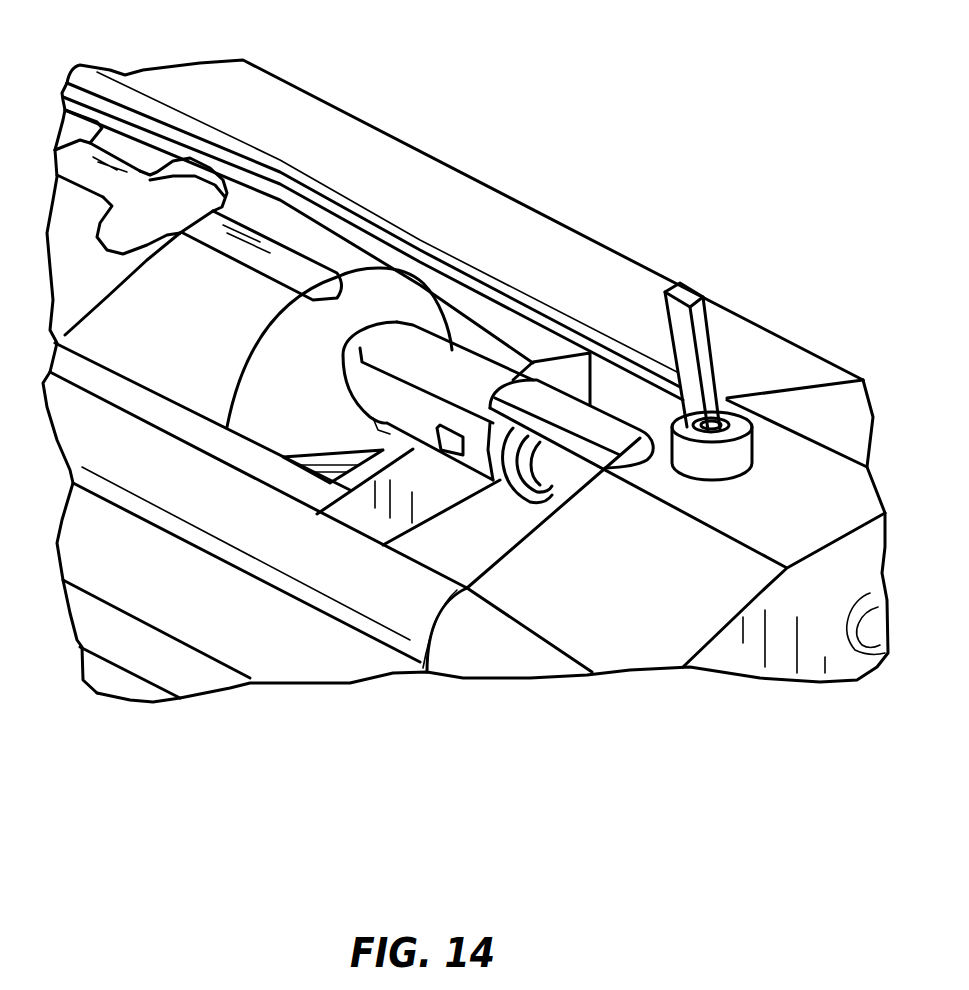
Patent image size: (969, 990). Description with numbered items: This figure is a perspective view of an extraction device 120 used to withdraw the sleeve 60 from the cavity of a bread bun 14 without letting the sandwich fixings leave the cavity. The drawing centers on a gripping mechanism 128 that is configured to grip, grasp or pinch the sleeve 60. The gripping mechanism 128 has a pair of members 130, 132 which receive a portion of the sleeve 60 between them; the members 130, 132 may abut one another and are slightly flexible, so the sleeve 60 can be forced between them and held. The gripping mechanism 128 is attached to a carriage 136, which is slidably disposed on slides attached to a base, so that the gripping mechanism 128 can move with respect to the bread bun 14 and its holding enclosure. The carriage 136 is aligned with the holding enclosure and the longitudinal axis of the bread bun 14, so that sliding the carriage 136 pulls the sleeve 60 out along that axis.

The bread bun 14 is at (265, 255).
The sleeve 60 is at (462, 373).
The extraction device 120 is at (627, 243).
The gripping mechanism 128 is at (560, 412).
The member 130 is at (593, 432).
The member 132 is at (524, 443).
The carriage 136 is at (687, 593).